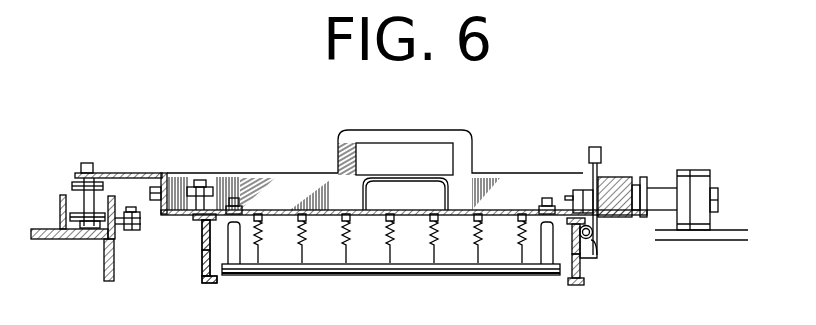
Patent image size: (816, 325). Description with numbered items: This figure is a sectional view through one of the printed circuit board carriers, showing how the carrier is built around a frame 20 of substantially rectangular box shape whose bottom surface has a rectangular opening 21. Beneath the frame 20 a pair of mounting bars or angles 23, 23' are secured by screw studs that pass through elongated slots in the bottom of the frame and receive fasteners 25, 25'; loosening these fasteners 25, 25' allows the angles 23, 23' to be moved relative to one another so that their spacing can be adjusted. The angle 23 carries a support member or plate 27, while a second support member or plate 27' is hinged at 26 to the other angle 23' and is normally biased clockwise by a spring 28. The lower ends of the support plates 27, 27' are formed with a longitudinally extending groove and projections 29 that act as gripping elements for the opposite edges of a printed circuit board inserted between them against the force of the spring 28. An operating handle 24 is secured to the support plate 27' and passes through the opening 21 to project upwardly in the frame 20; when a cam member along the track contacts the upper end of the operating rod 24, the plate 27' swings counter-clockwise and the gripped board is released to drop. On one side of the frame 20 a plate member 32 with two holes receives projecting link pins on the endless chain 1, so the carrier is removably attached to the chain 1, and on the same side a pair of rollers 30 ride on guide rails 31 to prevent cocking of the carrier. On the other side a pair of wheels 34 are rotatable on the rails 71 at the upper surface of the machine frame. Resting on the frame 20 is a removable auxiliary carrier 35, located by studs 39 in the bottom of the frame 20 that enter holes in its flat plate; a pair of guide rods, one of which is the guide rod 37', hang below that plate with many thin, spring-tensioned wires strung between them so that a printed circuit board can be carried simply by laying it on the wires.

The endless chain 1 is at (85, 200).
The frame 20 is at (520, 185).
The rectangular opening 21 is at (220, 222).
The mounting bar or angle 23 is at (186, 235).
The mounting bar or angle 23' is at (554, 274).
The operating handle 24 is at (601, 157).
The fastener 25 is at (187, 172).
The fastener 25' is at (572, 176).
The hinge 26 is at (593, 234).
The support member or plate 27 is at (180, 267).
The support member or plate 27' is at (601, 284).
The spring 28 is at (585, 258).
The grooves and projections 29 is at (215, 283).
The roller 30 is at (129, 222).
The guide rail 31 is at (115, 200).
The plate member 32 is at (115, 173).
The wheel 34 is at (692, 175).
The auxiliary carrier 35 is at (218, 217).
The guide rod 37' is at (391, 289).
The stud 39 is at (183, 205).
The rail 71 is at (690, 242).